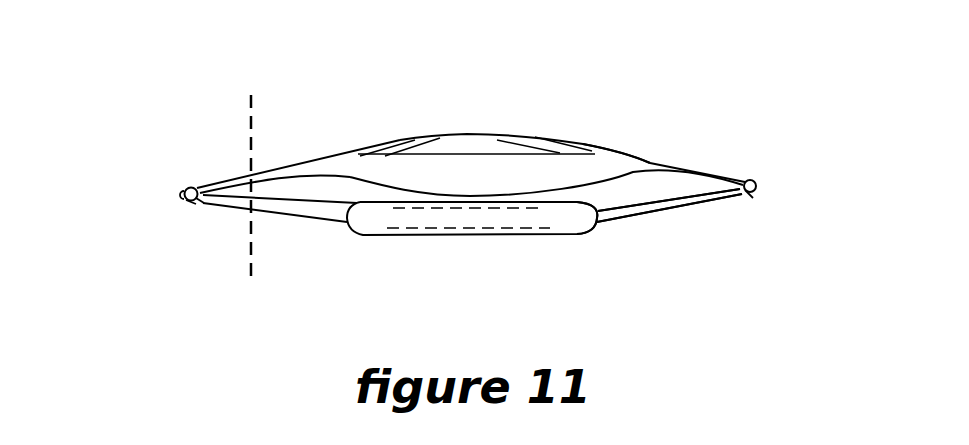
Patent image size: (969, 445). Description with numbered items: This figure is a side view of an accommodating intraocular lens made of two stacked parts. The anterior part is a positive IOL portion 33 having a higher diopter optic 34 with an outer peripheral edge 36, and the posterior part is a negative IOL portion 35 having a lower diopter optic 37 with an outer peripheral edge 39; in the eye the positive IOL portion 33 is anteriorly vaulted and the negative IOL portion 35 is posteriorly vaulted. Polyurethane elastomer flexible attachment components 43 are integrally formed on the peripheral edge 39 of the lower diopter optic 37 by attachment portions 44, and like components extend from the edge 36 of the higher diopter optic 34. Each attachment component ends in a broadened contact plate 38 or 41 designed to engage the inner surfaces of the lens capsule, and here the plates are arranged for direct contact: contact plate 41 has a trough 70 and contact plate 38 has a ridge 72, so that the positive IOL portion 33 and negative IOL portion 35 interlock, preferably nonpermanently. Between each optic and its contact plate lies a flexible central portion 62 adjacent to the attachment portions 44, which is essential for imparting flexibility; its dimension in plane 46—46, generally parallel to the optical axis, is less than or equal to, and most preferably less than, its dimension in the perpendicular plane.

The positive IOL portion 33 is at (470, 134).
The higher diopter optic 34 is at (532, 137).
The outer peripheral edge 36 is at (594, 150).
The attachment portions 44 is at (357, 206).
The negative IOL portion 35 is at (520, 220).
The lower diopter optic 37 is at (468, 220).
The outer peripheral edge 39 is at (600, 220).
The contact plate 38 is at (200, 184).
The trough 70 is at (180, 197).
The ridge 72 is at (187, 207).
The contact plate 41 is at (190, 207).
The flexible central portions 62 is at (688, 198).
The flexible attachment components 43 is at (747, 198).
The plane 46— 46 is at (249, 186).